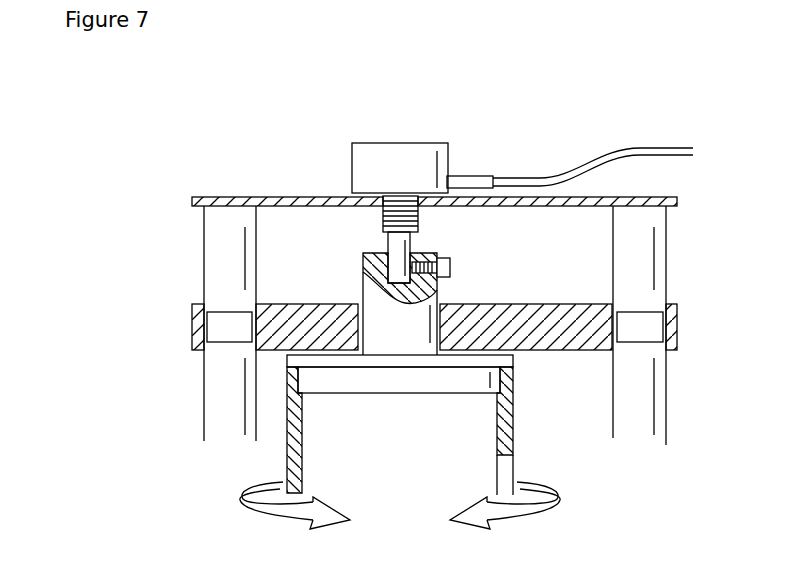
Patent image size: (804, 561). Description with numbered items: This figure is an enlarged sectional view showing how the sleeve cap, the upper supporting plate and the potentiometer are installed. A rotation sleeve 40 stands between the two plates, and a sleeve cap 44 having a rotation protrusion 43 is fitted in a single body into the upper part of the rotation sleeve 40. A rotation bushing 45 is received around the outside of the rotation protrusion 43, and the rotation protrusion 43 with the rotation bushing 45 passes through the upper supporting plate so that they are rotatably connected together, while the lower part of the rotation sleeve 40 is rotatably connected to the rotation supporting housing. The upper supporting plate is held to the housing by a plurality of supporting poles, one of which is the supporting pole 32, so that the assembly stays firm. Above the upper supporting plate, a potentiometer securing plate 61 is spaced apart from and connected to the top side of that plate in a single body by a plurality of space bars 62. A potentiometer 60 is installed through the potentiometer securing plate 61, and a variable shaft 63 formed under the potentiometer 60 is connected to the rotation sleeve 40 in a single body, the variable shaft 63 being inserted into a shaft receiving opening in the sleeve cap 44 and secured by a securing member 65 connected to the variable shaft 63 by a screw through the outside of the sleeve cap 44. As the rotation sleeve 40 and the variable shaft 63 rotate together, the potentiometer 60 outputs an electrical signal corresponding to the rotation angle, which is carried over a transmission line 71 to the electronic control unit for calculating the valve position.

The supporting pole 32 is at (632, 401).
The rotation sleeve 40 is at (293, 440).
The rotation protrusion 43 is at (372, 277).
The sleeve cap 44 is at (337, 380).
The rotation bushing 45 is at (357, 325).
The potentiometer 60 is at (393, 160).
The potentiometer securing plate 61 is at (285, 200).
The space bar 62 is at (223, 242).
The variable shaft 63 is at (398, 258).
The securing member 65 is at (448, 266).
The transmission line 71 is at (623, 150).